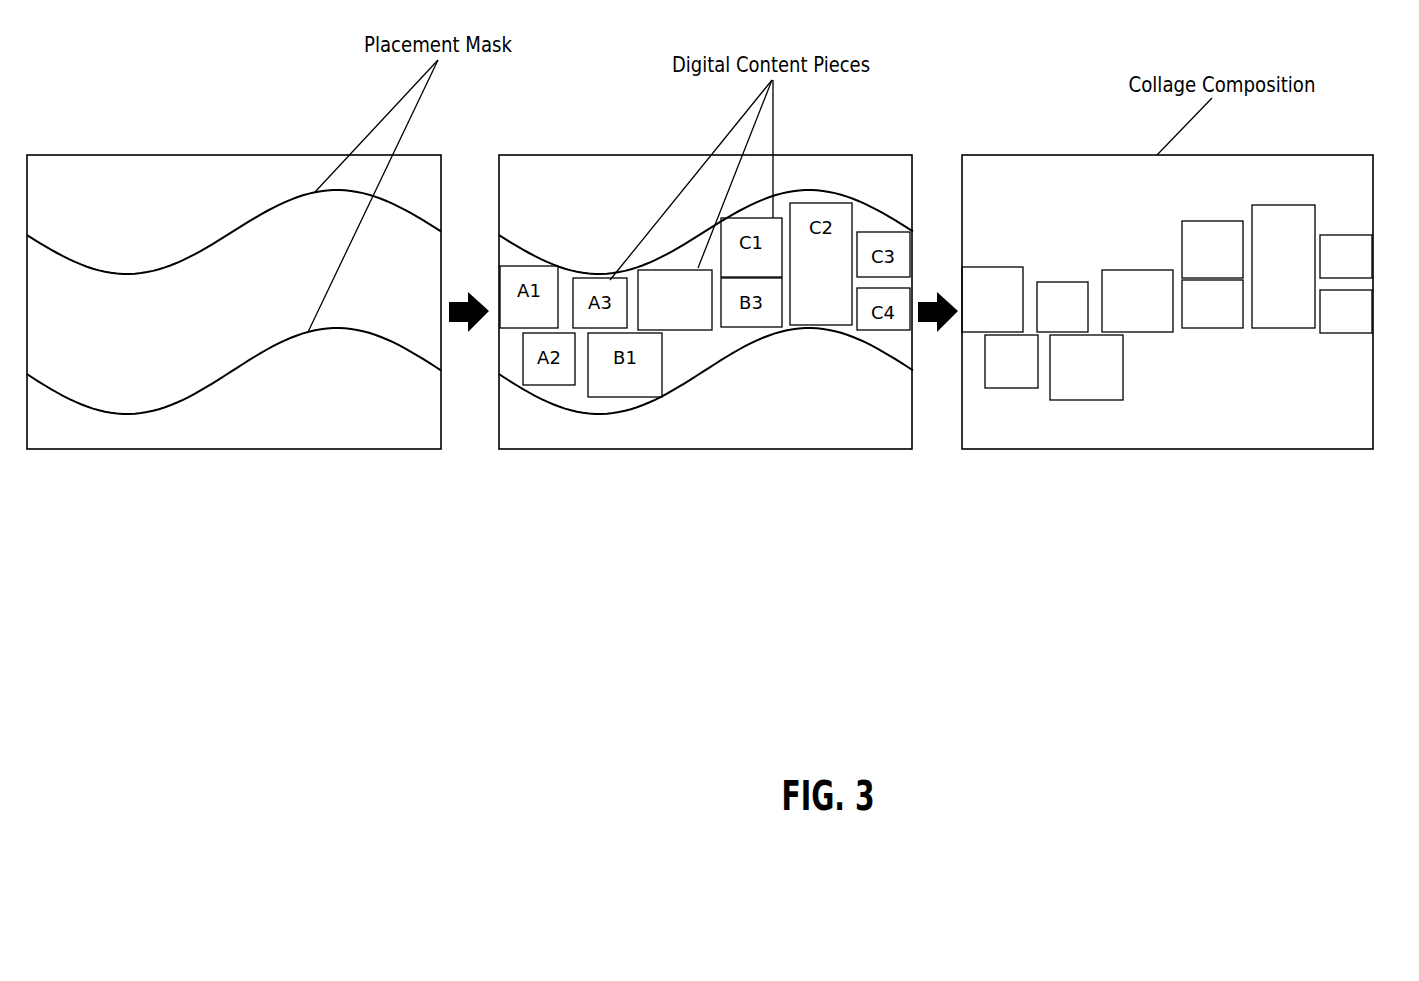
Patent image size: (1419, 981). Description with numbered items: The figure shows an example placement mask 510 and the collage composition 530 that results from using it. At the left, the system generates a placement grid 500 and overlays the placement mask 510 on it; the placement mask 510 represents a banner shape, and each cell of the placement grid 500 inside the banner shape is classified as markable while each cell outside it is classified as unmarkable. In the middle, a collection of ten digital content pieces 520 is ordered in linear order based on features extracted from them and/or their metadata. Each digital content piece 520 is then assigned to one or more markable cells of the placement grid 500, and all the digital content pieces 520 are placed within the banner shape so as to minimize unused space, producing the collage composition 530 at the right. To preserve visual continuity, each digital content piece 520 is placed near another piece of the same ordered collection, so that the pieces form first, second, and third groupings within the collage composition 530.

The placement grid 500 is at (143, 192).
The placement mask 510 is at (207, 309).
The digital content pieces 520 is at (677, 333).
The collage composition 530 is at (1168, 192).